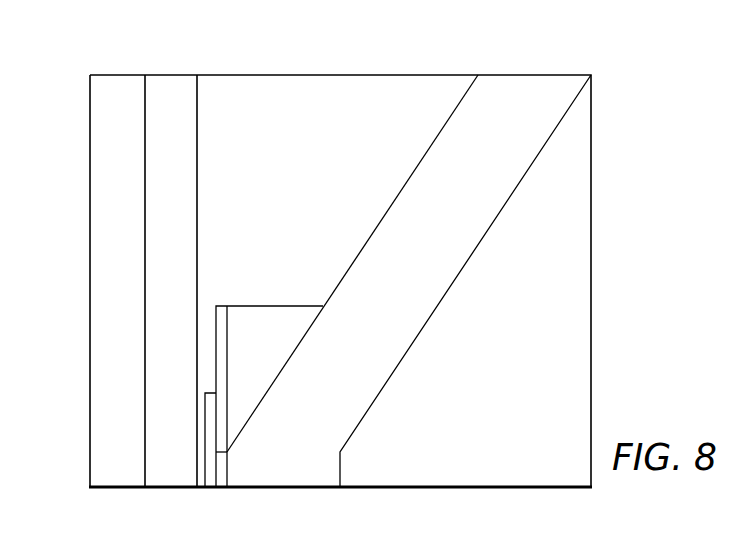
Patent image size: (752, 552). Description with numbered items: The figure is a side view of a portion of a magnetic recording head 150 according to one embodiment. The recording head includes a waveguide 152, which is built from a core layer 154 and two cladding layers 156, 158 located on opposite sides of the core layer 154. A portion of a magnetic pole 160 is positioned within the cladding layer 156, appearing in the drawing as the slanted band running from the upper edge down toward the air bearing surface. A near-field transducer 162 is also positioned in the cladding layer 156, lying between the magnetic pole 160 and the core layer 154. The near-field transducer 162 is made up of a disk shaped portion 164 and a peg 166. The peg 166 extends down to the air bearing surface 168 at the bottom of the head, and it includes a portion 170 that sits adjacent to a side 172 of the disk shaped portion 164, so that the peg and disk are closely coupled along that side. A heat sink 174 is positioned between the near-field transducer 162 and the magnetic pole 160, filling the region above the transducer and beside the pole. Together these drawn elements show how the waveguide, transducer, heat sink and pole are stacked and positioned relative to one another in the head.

The magnetic recording head 150 is at (633, 177).
The waveguide 152 is at (591, 68).
The core layer 154 is at (155, 130).
The cladding layer 156 is at (382, 90).
The cladding layer 158 is at (105, 182).
The magnetic pole 160 is at (440, 256).
The near-field transducer 162 is at (210, 298).
The disk shaped portion 164 is at (220, 347).
The peg 166 is at (212, 437).
The air bearing surface 168 is at (208, 487).
The portion of the peg 170 is at (210, 415).
The side of the disk shaped portion 172 is at (216, 404).
The heat sink 174 is at (287, 320).